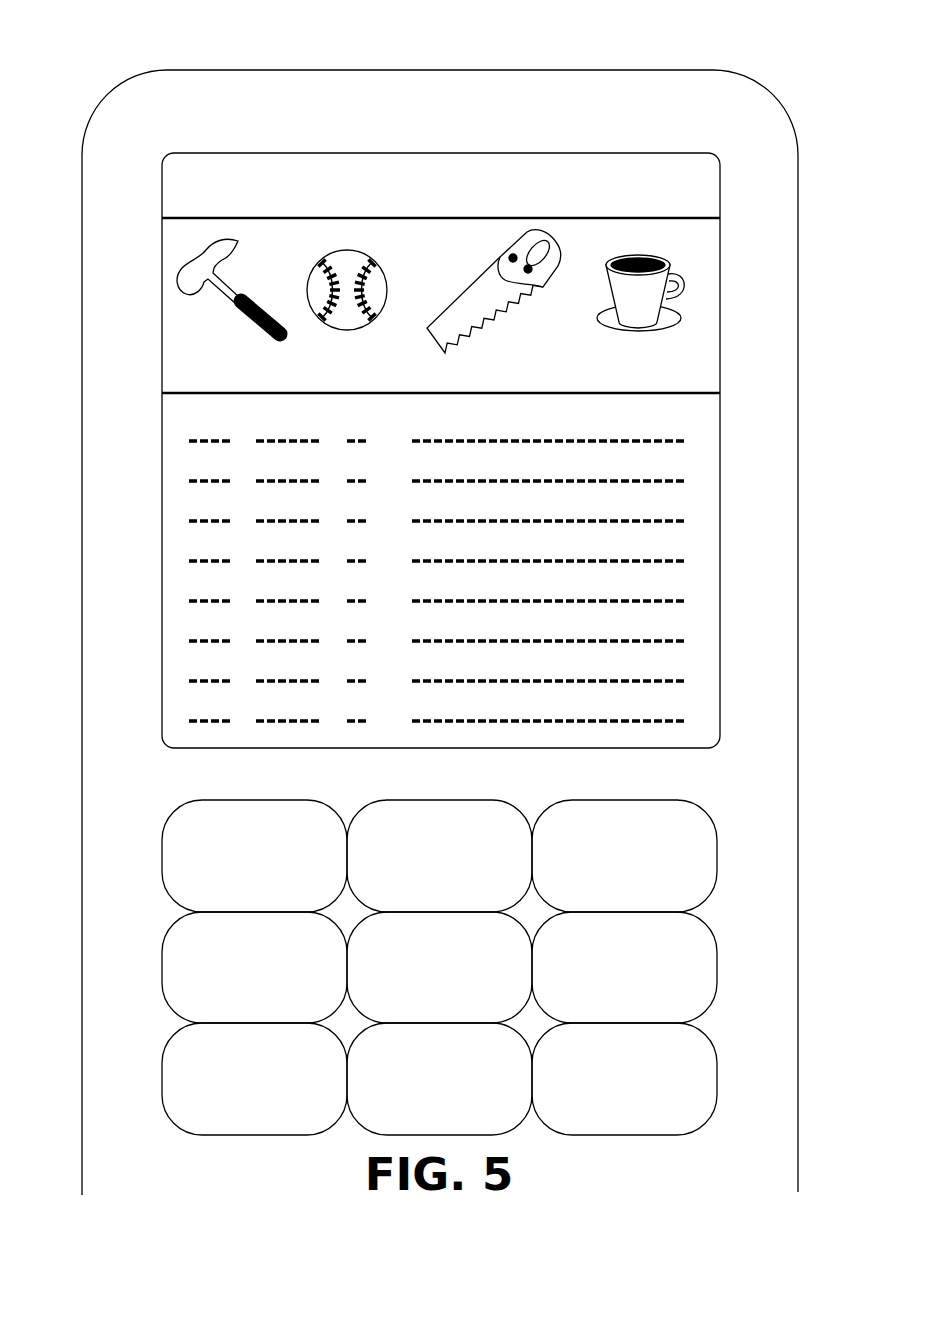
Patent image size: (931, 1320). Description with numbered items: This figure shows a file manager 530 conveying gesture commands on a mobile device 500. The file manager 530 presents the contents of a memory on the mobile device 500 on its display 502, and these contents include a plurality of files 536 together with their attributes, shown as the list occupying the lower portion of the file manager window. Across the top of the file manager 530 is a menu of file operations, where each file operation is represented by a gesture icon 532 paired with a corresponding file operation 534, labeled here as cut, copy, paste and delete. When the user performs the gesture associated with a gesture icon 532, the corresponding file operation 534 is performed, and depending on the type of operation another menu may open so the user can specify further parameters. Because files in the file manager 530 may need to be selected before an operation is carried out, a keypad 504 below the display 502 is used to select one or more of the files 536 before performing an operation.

The mobile device 500 is at (257, 67).
The display 502 is at (588, 150).
The file manager 530 is at (348, 169).
The gesture icon 532 is at (170, 250).
The file operation 534 is at (202, 374).
The files 536 is at (697, 501).
The keypad 504 is at (160, 853).